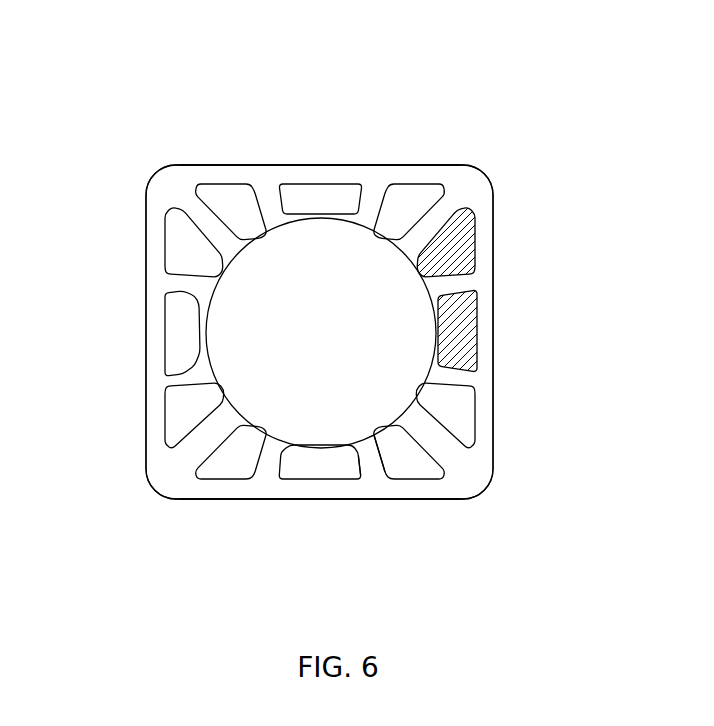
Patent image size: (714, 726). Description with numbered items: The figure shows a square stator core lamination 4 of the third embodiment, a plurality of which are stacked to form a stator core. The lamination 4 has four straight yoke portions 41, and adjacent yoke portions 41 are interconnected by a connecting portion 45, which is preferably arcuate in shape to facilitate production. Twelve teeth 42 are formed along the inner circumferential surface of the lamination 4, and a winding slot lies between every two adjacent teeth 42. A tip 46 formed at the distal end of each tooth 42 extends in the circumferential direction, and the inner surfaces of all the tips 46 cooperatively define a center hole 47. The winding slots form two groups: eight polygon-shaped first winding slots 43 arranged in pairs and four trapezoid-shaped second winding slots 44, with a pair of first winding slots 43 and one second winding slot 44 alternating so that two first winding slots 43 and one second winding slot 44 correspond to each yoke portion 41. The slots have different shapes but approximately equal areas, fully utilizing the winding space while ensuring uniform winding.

The stator core lamination 4 is at (496, 112).
The yoke portion 41 is at (348, 168).
The tooth 42 is at (275, 486).
The first winding slot 43 is at (227, 195).
The second winding slot 44 is at (312, 196).
The connecting portion 45 is at (477, 166).
The tip 46 is at (393, 437).
The center hole 47 is at (387, 345).